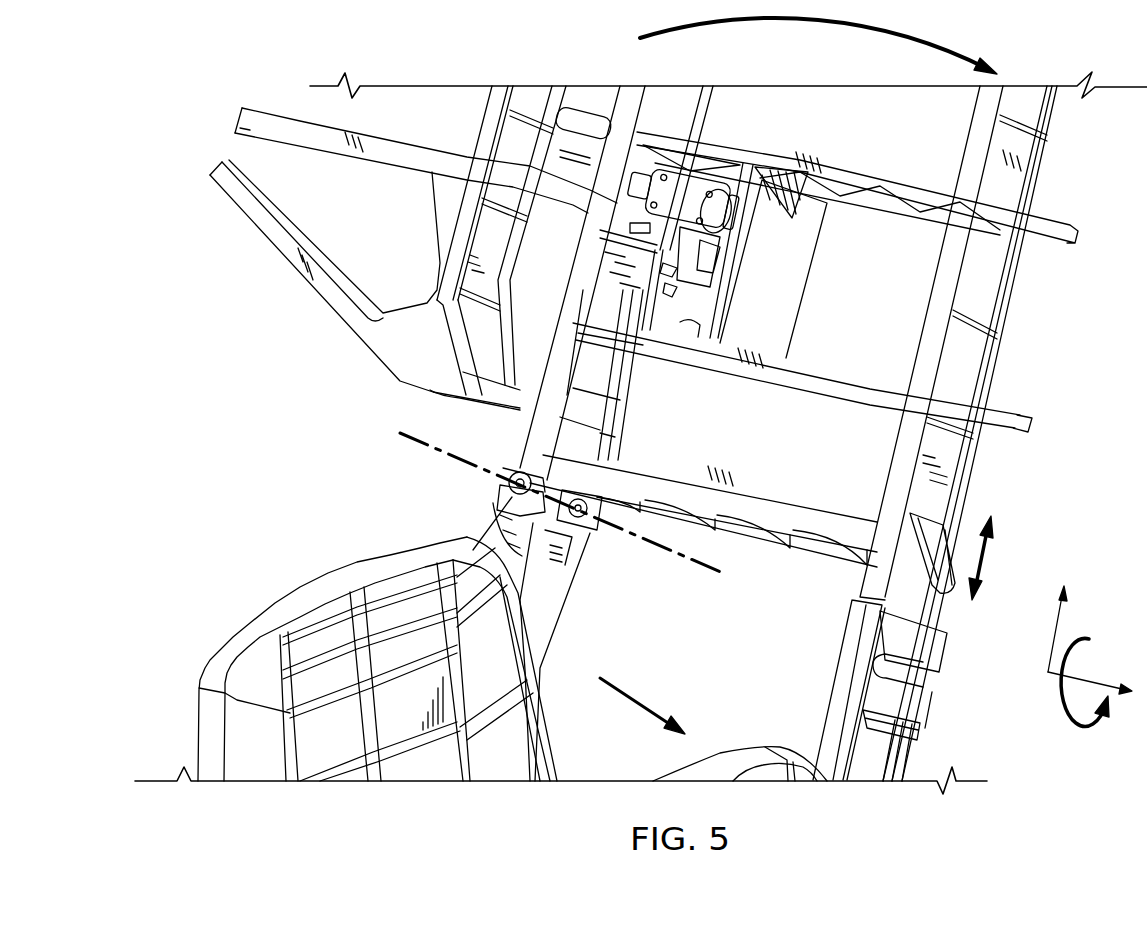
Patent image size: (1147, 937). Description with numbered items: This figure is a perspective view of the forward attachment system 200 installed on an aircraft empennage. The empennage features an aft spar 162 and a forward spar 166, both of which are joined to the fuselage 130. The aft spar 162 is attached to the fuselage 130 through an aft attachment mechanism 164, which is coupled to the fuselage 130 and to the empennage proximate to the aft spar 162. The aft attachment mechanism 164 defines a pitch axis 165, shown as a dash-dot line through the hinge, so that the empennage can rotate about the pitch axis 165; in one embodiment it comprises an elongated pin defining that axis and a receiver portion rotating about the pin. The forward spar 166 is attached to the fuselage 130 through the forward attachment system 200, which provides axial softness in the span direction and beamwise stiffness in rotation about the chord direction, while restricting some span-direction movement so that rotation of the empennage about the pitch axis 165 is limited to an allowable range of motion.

The fuselage 130 is at (900, 762).
The aft spar 162 is at (688, 103).
The aft attachment mechanism 164 is at (590, 545).
The pitch axis 165 is at (453, 458).
The forward spar 166 is at (997, 275).
The forward attachment system 200 is at (938, 652).